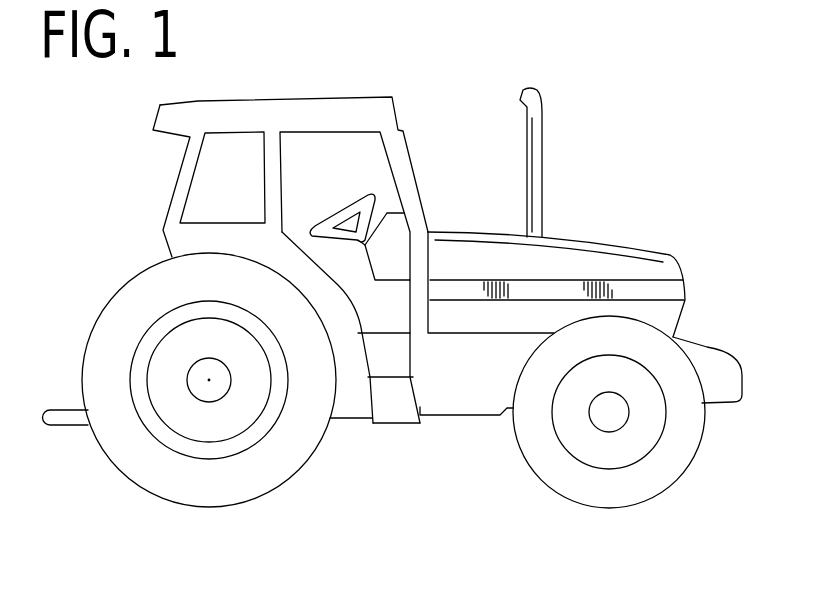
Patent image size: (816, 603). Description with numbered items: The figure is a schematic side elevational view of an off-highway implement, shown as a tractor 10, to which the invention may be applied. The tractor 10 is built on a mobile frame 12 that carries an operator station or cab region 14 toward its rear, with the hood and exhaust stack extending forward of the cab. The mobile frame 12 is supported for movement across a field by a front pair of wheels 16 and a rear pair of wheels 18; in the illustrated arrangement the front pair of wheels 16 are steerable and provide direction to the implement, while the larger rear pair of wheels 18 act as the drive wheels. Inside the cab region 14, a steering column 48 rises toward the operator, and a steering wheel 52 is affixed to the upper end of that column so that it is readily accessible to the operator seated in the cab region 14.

The tractor 10 is at (638, 112).
The mobile frame 12 is at (455, 393).
The cab region 14 is at (370, 165).
The front pair of wheels 16 is at (648, 482).
The rear pair of wheels 18 is at (298, 447).
The steering column 48 is at (355, 242).
The steering wheel 52 is at (343, 217).